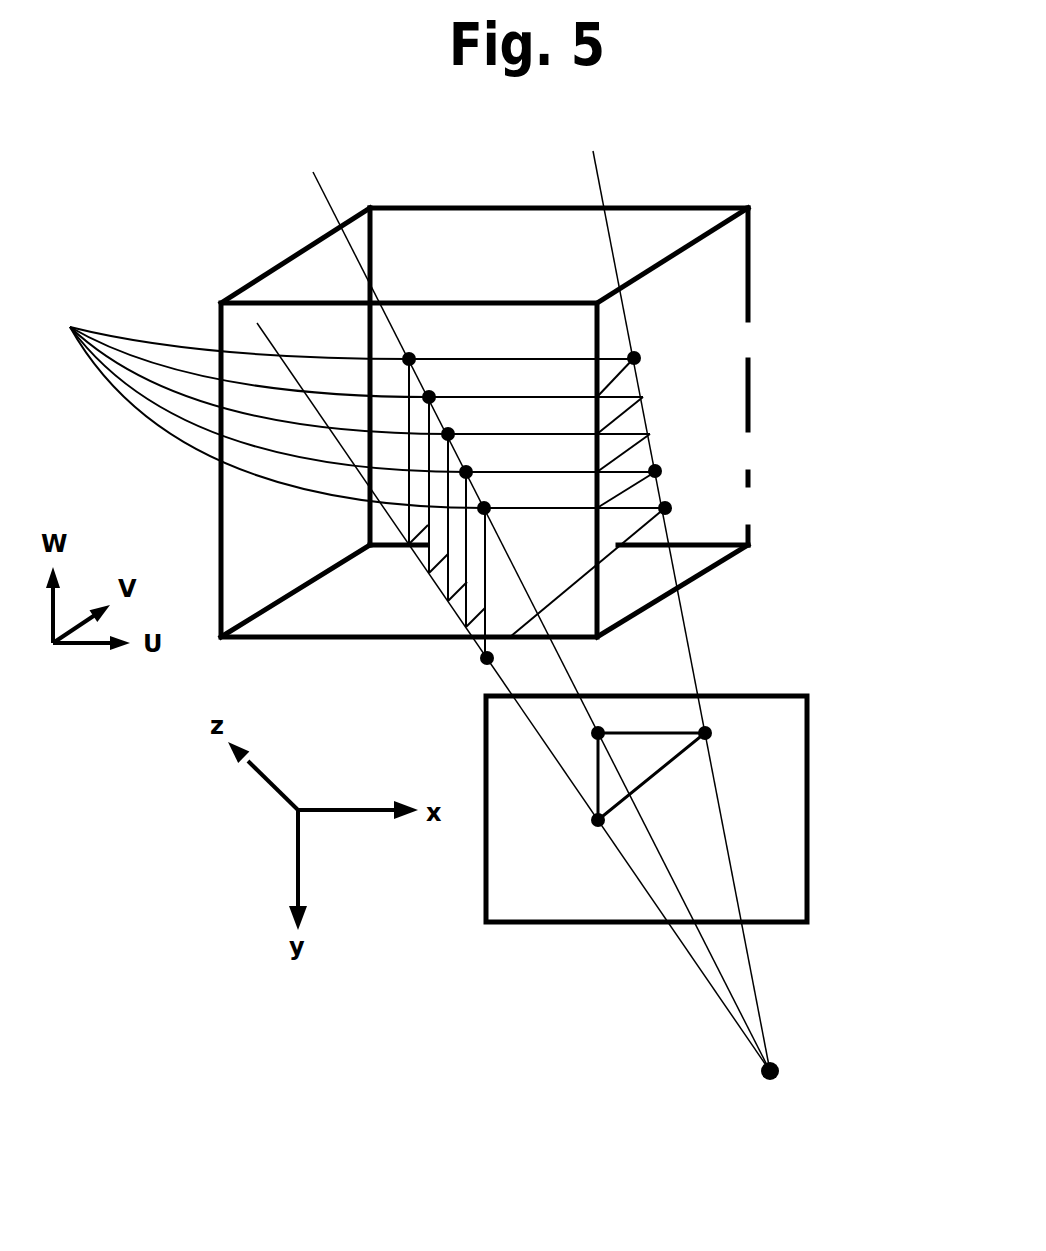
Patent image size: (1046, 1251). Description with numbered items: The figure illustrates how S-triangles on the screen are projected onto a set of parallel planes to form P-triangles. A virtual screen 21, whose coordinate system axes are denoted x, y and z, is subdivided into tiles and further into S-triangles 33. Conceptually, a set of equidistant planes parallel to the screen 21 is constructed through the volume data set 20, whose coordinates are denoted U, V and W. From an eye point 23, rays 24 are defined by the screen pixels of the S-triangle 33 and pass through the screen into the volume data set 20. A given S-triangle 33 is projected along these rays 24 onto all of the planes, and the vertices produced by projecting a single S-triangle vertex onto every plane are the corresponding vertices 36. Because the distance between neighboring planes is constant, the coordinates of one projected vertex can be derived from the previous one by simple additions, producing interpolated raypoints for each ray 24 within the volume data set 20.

The volume data set 20 is at (710, 280).
The virtual screen 21 is at (788, 770).
The eye point 23 is at (780, 1071).
The rays 24 is at (330, 208).
The S-triangle 33 is at (648, 765).
The corresponding vertices 36 is at (271, 400).